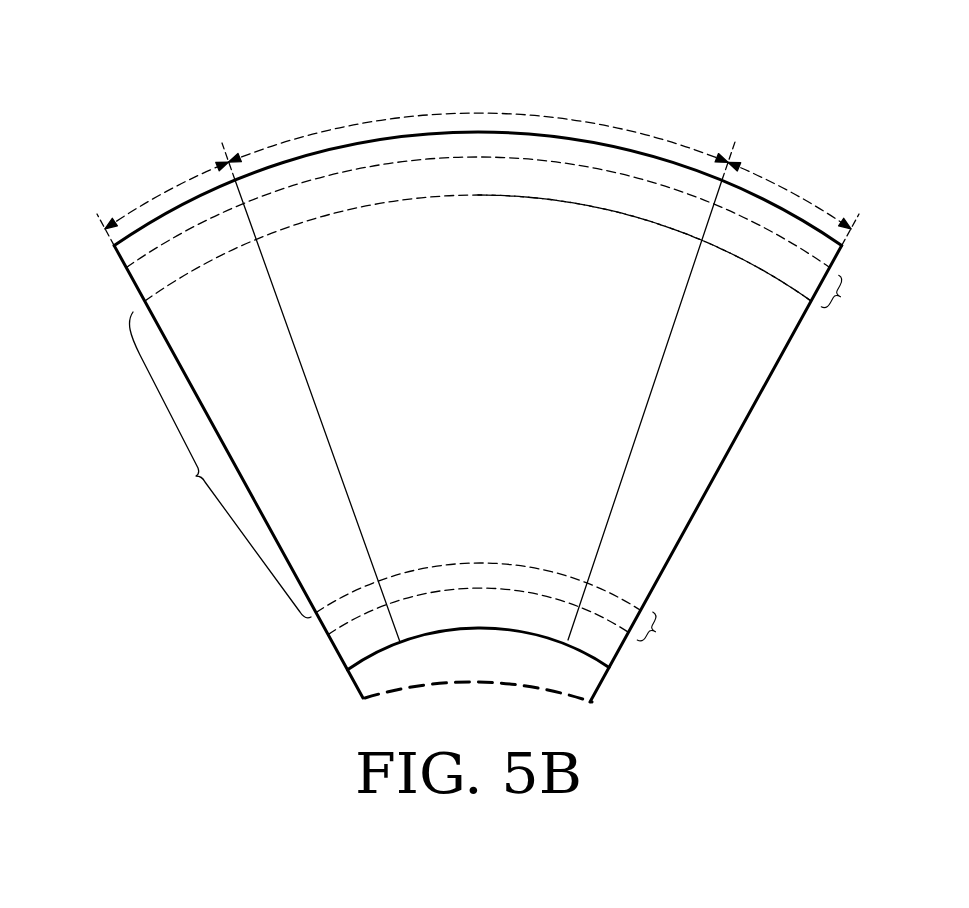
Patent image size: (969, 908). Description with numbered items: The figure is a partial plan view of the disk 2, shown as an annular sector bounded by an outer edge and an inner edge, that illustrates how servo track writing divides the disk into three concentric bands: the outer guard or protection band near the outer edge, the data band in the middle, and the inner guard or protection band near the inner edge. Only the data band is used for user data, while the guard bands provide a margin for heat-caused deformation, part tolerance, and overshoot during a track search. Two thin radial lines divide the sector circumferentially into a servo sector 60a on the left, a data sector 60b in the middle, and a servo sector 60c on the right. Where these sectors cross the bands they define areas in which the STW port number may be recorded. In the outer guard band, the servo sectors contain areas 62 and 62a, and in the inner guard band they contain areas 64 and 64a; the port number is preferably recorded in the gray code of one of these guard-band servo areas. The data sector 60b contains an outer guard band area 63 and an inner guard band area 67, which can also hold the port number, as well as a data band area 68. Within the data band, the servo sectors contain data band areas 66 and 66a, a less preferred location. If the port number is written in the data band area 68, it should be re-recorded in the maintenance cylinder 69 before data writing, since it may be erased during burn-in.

The disk 2 is at (110, 337).
The servo sector 60a is at (132, 157).
The data sector 60b is at (470, 76).
The servo sector 60c is at (818, 146).
The area of servo sector in outer protection band 62 is at (157, 270).
The area of servo sector in outer protection band 62a is at (793, 279).
The area of data sector in outer protection band 63 is at (624, 198).
The area of servo sector in inner protection band 64 is at (342, 609).
The area of servo sector in inner protection band 64a is at (597, 606).
The data band area of servo sector 66 is at (238, 377).
The data band area of servo sector 66a is at (678, 455).
The area of data sector in inner protection band 67 is at (458, 577).
The data band area of data sector 68 is at (400, 460).
The maintenance cylinder 69 is at (563, 668).